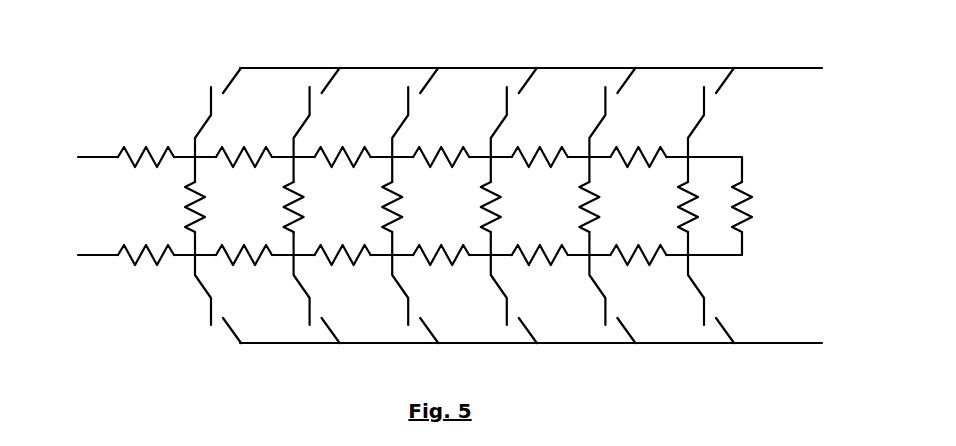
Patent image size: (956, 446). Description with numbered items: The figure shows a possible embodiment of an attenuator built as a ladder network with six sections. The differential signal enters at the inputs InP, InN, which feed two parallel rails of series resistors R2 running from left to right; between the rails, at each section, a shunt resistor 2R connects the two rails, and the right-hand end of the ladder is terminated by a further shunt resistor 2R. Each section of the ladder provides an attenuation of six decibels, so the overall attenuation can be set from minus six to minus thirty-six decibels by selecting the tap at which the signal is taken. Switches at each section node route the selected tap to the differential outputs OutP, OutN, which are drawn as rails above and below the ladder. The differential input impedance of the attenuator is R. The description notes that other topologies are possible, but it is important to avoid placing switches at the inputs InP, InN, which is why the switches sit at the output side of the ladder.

The positive input InP is at (110, 158).
The negative input InN is at (110, 256).
The positive output rail OutP is at (565, 69).
The negative output rail OutN is at (566, 344).
The series ladder resistor R/2 R2 is at (410, 206).
The shunt resistor 2R is at (483, 206).